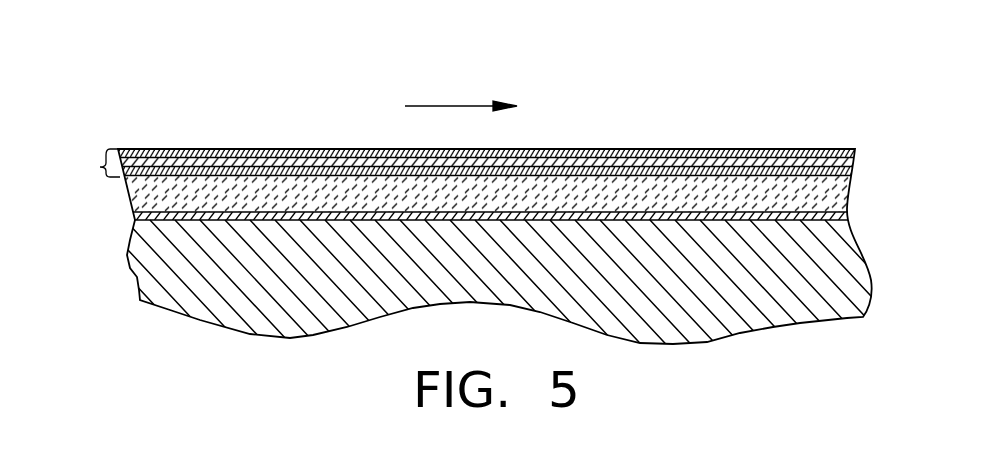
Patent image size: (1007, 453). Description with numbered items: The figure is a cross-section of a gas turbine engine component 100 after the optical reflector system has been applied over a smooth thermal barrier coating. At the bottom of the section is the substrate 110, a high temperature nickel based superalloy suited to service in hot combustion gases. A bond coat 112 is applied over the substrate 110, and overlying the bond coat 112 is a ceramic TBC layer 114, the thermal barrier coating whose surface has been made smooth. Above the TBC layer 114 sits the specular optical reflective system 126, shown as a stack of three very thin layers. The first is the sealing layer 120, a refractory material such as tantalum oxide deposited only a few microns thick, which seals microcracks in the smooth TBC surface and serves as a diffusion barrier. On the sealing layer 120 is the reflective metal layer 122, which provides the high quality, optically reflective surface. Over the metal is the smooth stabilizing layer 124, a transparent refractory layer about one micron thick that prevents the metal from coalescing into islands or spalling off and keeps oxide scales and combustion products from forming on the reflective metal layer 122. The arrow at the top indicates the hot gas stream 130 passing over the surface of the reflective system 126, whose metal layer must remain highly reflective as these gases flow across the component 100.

The component 100 is at (172, 126).
The substrate 110 is at (850, 307).
The bond coat 112 is at (822, 215).
The ceramic TBC layer 114 is at (817, 204).
The sealing layer 120 is at (830, 171).
The reflective metal layer 122 is at (833, 149).
The stabilizing layer 124 is at (767, 149).
The specular optical reflective system 126 is at (100, 168).
The hot gas stream 130 is at (450, 105).